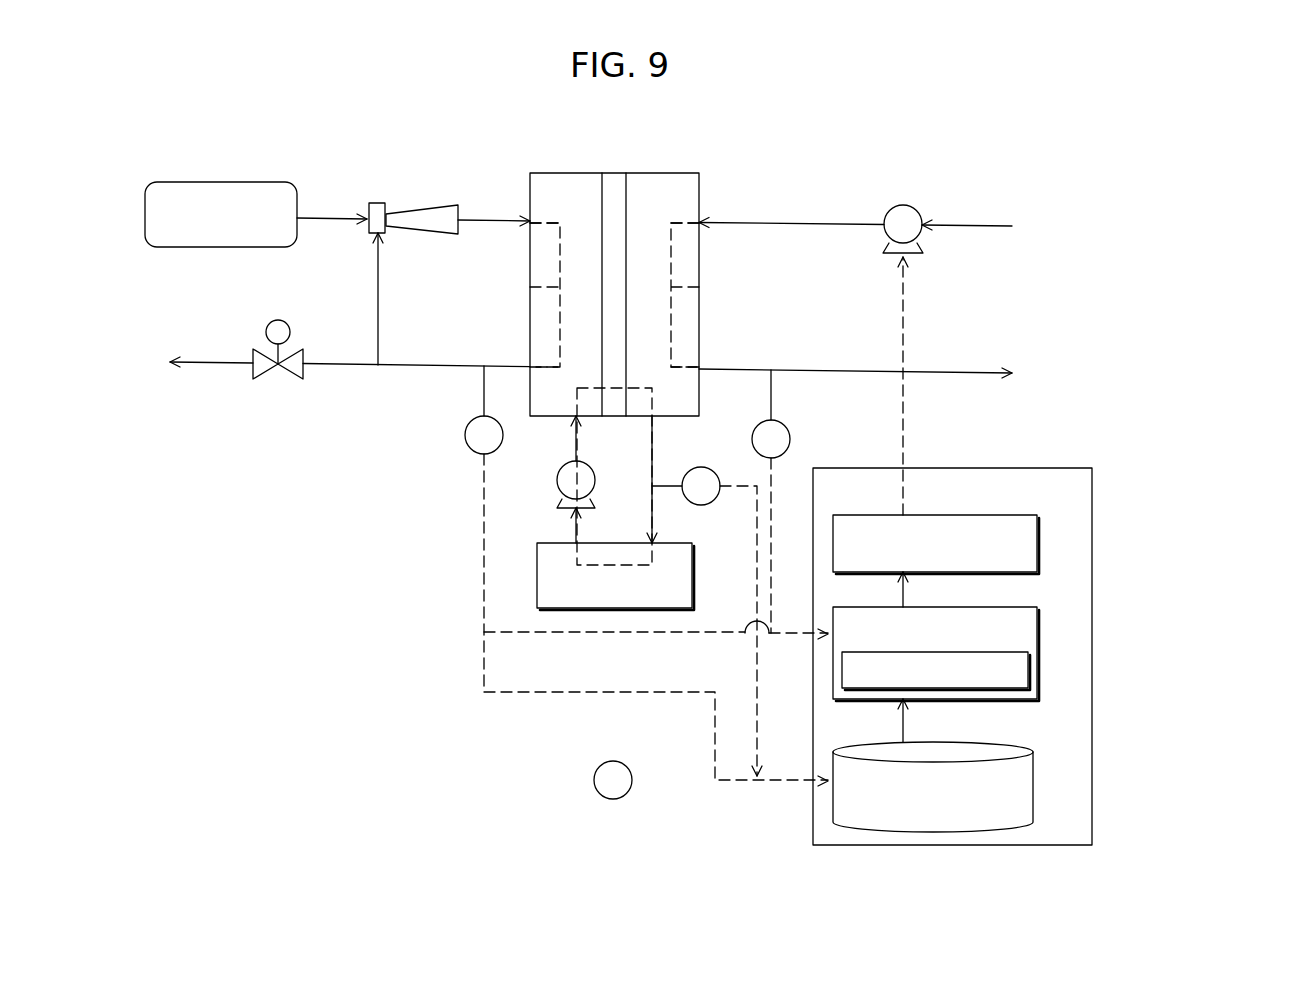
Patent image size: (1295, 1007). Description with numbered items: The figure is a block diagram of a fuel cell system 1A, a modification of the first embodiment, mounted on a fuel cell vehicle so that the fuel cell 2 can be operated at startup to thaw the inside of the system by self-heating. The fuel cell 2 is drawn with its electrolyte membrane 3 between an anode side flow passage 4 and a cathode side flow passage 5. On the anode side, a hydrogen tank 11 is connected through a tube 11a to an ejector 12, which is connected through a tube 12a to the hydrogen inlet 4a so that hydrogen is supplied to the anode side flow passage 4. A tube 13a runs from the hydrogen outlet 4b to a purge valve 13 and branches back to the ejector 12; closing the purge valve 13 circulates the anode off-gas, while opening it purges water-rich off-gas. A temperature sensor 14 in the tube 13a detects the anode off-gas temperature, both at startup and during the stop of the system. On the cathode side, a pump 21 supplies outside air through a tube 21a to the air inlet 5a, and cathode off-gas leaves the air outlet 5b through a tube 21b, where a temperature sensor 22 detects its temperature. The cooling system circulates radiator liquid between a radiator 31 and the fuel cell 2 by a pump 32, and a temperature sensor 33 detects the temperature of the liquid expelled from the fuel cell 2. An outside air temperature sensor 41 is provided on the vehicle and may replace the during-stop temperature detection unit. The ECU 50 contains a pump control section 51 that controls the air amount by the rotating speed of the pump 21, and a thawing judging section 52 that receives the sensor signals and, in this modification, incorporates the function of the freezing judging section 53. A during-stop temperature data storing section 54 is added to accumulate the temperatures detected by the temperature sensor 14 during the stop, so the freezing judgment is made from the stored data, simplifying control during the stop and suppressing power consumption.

The fuel cell system 1A is at (997, 162).
The fuel cell 2 is at (637, 157).
The electrolyte membrane 3 is at (615, 173).
The anode side flow passage 4 is at (530, 290).
The hydrogen inlet 4a is at (530, 226).
The hydrogen outlet 4b is at (530, 364).
The cathode side flow passage 5 is at (699, 290).
The air inlet 5a is at (699, 225).
The air outlet 5b is at (699, 366).
The hydrogen tank 11 is at (242, 182).
The tube 11a is at (318, 216).
The ejector 12 is at (405, 207).
The tube 12a is at (482, 219).
The purge valve 13 is at (290, 348).
The tube 13a is at (400, 365).
The temperature sensor 14 is at (466, 441).
The pump 21 is at (900, 206).
The tube 21a is at (790, 223).
The tube 21b is at (805, 369).
The temperature sensor 22 is at (787, 423).
The radiator 31 is at (693, 575).
The pump 32 is at (589, 466).
The temperature sensor 33 is at (710, 503).
The outside air temperature sensor 41 is at (628, 768).
The ECU 50 is at (1027, 468).
The pump control section 51 is at (1018, 515).
The thawing judging section 52 is at (1018, 607).
The freezing judging section 53 is at (1028, 670).
The during-stop temperature data storing section 54 is at (1020, 745).